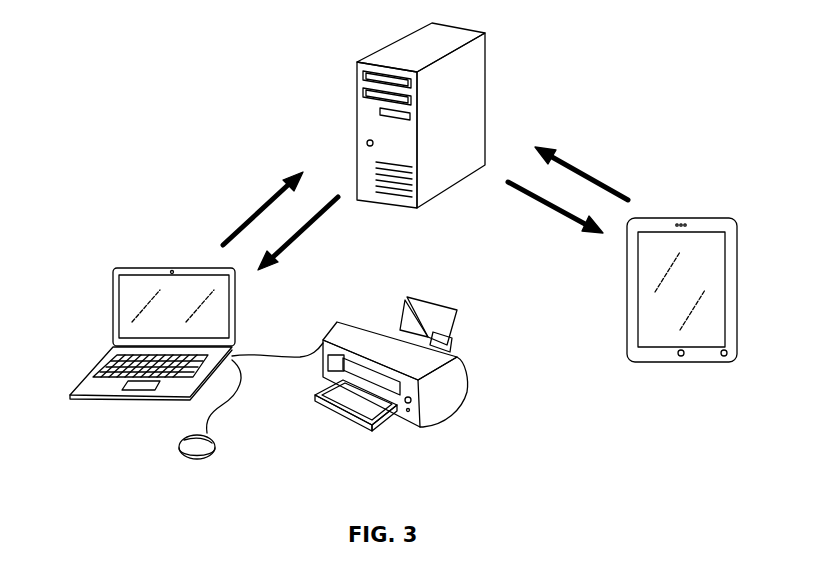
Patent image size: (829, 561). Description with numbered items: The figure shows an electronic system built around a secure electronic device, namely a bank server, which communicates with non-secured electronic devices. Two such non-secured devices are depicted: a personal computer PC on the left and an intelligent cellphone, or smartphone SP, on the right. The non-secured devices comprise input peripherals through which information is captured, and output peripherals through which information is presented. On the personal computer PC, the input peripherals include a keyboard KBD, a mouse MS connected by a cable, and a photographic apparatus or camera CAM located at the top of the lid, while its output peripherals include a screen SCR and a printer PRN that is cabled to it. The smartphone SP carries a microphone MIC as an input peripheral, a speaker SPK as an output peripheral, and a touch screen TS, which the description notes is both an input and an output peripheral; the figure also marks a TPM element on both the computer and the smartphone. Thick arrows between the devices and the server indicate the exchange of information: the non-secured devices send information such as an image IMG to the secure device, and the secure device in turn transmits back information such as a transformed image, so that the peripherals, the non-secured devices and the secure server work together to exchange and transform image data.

The image IMG is at (254, 189).
The personal computer PC is at (373, 333).
The screen SCR is at (127, 281).
The photographic apparatus (or camera) CAM is at (169, 262).
The keyboard KBD is at (93, 353).
The touchpad / trusted platform module TPM is at (104, 331).
The mouse MS is at (223, 465).
The printer PRN is at (451, 436).
The intelligent cellphone (smartphone) SP is at (667, 292).
The touch screen TS is at (656, 236).
The speaker SPK is at (684, 208).
The microphone MIC is at (665, 371).